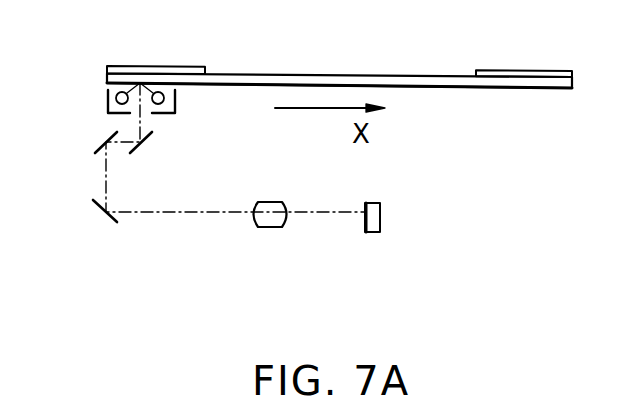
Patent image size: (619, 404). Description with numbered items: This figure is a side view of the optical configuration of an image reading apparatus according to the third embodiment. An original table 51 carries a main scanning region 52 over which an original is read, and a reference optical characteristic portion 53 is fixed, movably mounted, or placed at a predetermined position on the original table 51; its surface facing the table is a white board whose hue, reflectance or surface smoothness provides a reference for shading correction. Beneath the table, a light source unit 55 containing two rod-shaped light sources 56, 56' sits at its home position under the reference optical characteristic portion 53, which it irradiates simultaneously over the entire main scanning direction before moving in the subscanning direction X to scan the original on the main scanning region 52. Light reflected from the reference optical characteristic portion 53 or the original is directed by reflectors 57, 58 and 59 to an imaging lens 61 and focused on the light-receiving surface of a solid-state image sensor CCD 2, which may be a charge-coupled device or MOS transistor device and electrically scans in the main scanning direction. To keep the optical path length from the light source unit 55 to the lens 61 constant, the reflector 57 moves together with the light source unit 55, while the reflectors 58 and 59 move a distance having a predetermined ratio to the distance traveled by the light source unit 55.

The original table 51 is at (455, 88).
The main scanning region 52 is at (338, 75).
The reference optical characteristic portion 53 is at (158, 65).
The light source unit 55 is at (162, 115).
The rod-shaped light source 56 is at (90, 101).
The rod-shaped light source 56' is at (192, 101).
The reflector 57 is at (136, 152).
The reflector 58 is at (95, 150).
The reflector 59 is at (105, 217).
The lens 61 is at (263, 227).
The solid-state image sensor CCD 2 is at (372, 232).